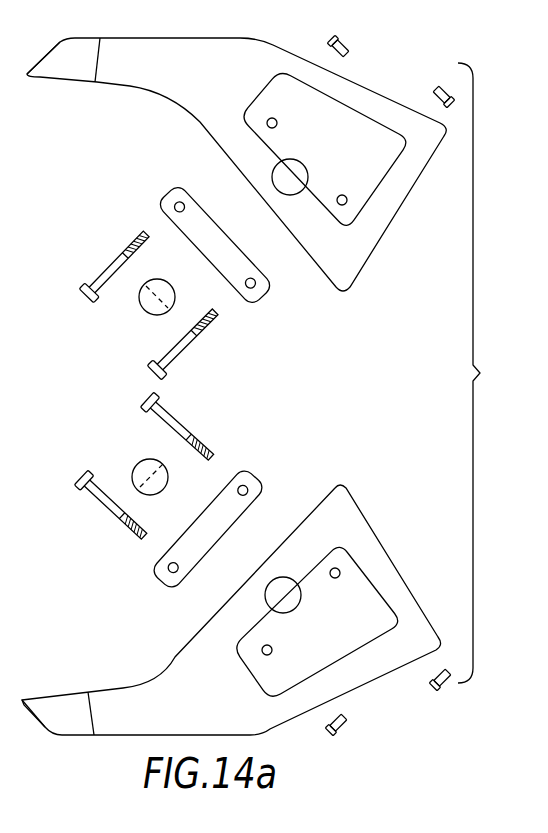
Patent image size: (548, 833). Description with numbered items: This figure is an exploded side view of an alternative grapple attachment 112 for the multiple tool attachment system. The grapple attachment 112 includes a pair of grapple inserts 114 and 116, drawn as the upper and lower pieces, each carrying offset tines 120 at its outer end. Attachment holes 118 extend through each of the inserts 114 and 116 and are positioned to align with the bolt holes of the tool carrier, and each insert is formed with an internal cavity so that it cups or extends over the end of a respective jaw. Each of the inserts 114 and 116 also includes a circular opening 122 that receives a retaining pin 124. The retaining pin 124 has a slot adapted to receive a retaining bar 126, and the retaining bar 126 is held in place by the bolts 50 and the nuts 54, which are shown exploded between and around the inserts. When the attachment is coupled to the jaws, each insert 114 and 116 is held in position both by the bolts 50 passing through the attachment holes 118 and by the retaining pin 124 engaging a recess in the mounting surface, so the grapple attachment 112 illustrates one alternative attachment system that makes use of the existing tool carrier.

The grapple attachment 112 is at (488, 373).
The grapple insert 114 is at (200, 85).
The grapple insert 116 is at (193, 716).
The attachment holes 118 is at (277, 118).
The offset tines 120 is at (84, 72).
The circular opening 122 is at (297, 160).
The retaining pin 124 is at (170, 290).
The retaining bar 126 is at (210, 222).
The bolts 50 is at (118, 255).
The nuts 54 is at (341, 41).